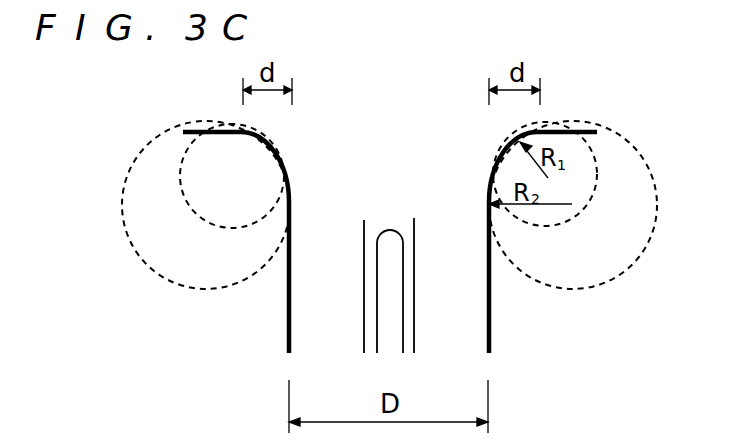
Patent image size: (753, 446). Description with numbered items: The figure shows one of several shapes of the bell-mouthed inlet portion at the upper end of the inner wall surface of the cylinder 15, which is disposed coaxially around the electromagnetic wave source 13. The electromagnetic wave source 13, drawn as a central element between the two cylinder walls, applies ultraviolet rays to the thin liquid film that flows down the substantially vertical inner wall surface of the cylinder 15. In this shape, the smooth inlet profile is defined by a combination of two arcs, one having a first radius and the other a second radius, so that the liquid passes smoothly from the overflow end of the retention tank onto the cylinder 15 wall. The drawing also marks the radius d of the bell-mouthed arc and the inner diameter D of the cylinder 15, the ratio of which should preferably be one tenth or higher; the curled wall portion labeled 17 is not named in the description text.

The electromagnetic wave source 13 is at (414, 240).
The cylinder 15 is at (484, 278).
The left tube wall with curled edge 17 is at (277, 153).